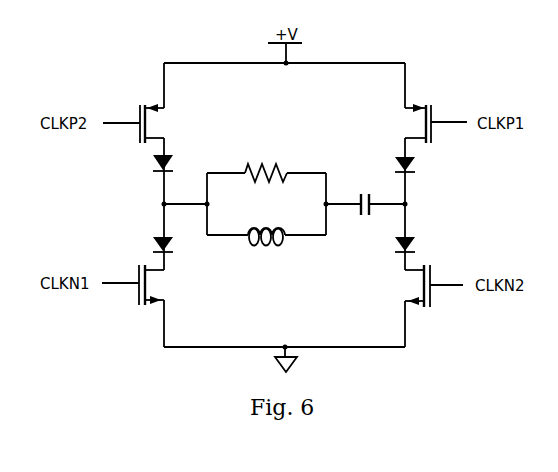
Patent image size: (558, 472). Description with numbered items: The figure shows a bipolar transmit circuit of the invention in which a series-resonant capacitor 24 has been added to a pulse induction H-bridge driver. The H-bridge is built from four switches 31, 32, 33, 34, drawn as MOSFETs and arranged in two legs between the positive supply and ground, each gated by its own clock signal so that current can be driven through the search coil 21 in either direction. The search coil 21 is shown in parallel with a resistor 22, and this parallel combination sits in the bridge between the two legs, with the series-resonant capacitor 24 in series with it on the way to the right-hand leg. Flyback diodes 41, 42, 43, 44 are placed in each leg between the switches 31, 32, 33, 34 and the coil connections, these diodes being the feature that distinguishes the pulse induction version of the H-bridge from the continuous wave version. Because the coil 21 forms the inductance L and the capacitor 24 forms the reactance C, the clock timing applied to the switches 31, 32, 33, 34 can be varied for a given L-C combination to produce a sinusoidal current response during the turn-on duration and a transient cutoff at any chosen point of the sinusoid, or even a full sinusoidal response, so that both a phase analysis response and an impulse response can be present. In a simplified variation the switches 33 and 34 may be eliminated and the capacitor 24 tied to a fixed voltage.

The search coil 21 is at (266, 225).
The resistor 22 is at (268, 160).
The series-resonant capacitor 24 is at (357, 200).
The switch 31 is at (165, 122).
The switch 32 is at (164, 283).
The switch 33 is at (404, 125).
The switch 34 is at (405, 286).
The flyback diode 41 is at (152, 165).
The flyback diode 42 is at (152, 247).
The flyback diode 43 is at (418, 164).
The flyback diode 44 is at (418, 247).